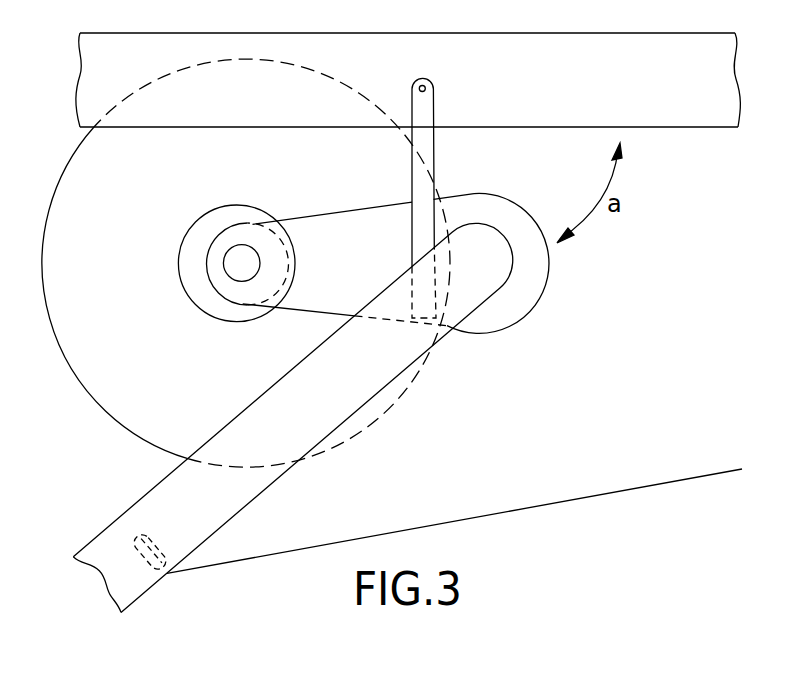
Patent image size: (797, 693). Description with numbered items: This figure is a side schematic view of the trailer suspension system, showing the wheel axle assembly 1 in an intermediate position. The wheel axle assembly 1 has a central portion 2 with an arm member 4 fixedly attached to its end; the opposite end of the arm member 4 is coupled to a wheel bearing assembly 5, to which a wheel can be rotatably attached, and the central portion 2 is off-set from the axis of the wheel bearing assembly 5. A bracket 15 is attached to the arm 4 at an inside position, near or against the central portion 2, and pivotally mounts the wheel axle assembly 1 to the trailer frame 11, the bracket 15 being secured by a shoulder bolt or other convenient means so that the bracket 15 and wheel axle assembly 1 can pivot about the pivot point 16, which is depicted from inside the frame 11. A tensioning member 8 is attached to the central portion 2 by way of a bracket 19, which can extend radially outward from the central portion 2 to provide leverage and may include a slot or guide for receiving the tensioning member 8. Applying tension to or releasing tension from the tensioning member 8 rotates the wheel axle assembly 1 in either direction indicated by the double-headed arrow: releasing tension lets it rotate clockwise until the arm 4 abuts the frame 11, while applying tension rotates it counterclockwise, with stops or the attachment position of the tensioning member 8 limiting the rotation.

The wheel axle assembly 1 is at (498, 365).
The central portion 2 is at (270, 485).
The arm member 4 is at (365, 268).
The wheel bearing assembly 5 is at (200, 311).
The tensioning member 8 is at (525, 509).
The trailer frame 11 is at (608, 94).
The bracket 15 is at (434, 161).
The pivot point 16 is at (427, 87).
The bracket 19 is at (143, 572).